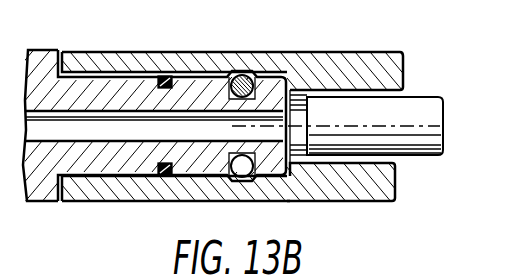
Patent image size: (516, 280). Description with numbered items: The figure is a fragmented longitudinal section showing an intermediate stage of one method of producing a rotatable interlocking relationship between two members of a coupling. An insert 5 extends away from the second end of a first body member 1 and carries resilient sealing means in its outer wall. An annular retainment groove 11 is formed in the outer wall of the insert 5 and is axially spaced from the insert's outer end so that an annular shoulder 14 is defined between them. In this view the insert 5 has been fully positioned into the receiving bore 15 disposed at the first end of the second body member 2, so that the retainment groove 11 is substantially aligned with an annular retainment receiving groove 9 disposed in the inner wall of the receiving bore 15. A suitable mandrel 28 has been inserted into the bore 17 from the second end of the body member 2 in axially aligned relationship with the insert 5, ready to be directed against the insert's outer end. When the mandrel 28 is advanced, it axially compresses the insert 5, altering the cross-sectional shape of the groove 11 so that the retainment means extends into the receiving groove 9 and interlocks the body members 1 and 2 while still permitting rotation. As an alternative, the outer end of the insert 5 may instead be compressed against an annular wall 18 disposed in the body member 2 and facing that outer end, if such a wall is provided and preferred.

The body member 1 is at (42, 58).
The body member 2 is at (321, 60).
The insert 5 is at (103, 200).
The annular retainment receiving groove 9 is at (243, 73).
The annular retainment groove 11 is at (229, 73).
The annular shoulder 14 is at (271, 76).
The receiving bore 15 is at (137, 200).
The bore 17 is at (345, 163).
The annular wall 18 is at (290, 176).
The mandrel 28 is at (417, 110).